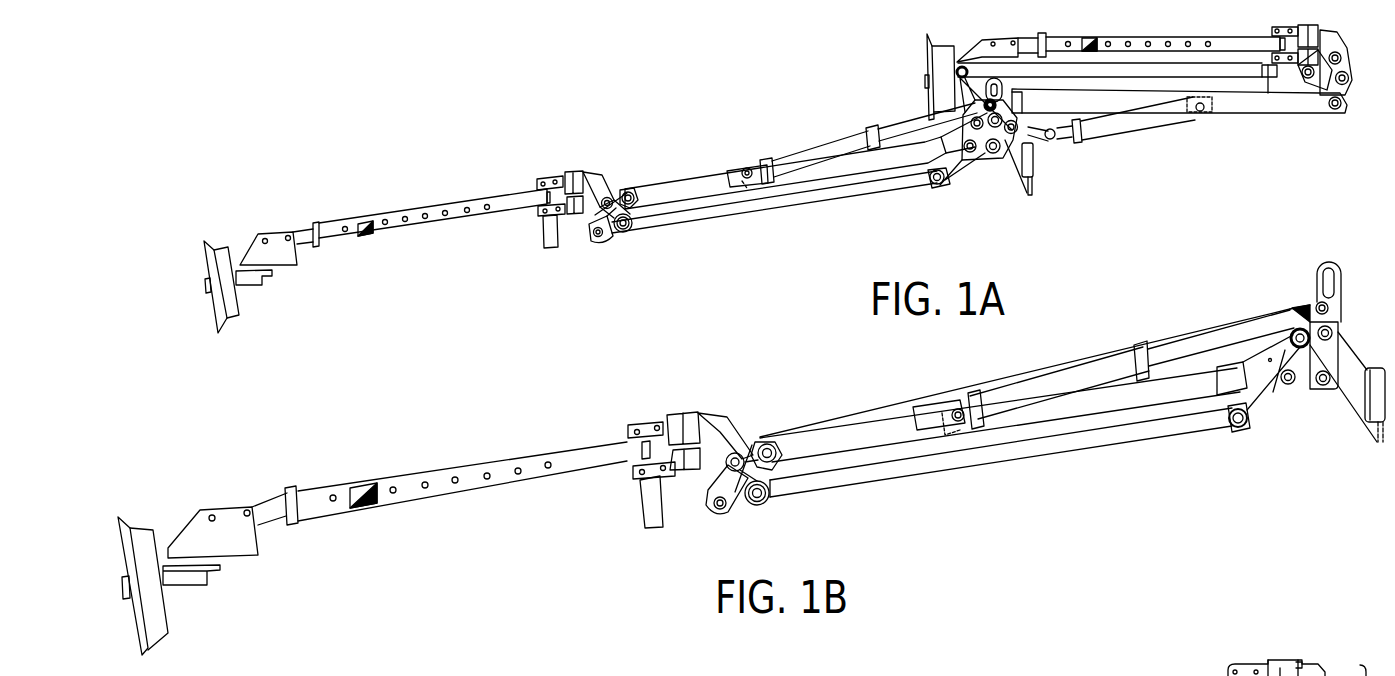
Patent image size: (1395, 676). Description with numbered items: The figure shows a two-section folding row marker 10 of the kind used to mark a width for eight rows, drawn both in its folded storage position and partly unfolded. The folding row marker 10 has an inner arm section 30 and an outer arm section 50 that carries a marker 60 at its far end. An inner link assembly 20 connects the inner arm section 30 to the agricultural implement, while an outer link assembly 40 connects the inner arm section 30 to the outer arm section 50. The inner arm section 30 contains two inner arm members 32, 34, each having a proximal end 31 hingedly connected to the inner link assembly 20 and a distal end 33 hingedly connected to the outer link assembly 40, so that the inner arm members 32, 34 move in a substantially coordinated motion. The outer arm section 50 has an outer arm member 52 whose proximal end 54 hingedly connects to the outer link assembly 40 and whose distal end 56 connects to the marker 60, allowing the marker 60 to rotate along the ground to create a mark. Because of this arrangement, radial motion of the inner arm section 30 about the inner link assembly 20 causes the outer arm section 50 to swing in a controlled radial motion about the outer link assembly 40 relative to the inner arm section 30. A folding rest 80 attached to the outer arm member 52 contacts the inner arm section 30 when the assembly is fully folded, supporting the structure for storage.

In FIG. 1A, the folding row marker 10 is at (970, 226).
In FIG. 1B, the inner link assembly 20 is at (1338, 421).
In FIG. 1A, the inner arm section 30 is at (973, 188).
In FIG. 1B, the proximal end 31 is at (1226, 432).
In FIG. 1B, the inner arm member 32 is at (847, 424).
In FIG. 1B, the distal end 33 is at (752, 515).
In FIG. 1B, the inner arm member 34 is at (1010, 465).
In FIG. 1B, the outer link assembly 40 is at (746, 463).
In FIG. 1A, the outer arm section 50 is at (600, 155).
In FIG. 1B, the outer arm member 52 is at (446, 464).
In FIG. 1B, the proximal end 54 is at (675, 477).
In FIG. 1B, the distal end 56 is at (268, 522).
In FIG. 1A, the marker 60 is at (212, 246).
In FIG. 1B, the marker 60 is at (121, 519).
In FIG. 1B, the folding rest 80 is at (640, 511).